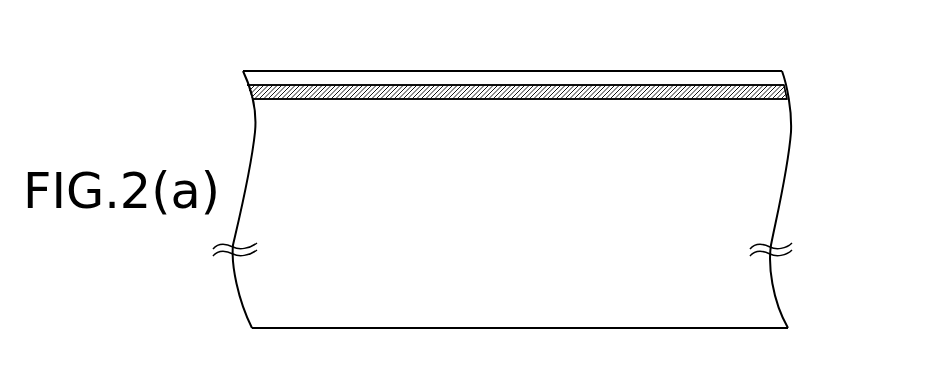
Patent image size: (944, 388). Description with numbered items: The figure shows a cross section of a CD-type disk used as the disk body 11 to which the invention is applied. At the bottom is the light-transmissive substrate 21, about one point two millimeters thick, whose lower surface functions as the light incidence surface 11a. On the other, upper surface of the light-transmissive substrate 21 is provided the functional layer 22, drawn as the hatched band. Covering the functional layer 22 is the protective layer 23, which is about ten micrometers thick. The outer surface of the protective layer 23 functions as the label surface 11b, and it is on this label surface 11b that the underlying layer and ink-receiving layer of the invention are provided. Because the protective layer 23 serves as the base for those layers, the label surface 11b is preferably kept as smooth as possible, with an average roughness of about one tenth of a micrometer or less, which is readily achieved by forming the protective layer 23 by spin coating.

The disk body 11 is at (296, 39).
The light incidence surface 11a is at (473, 328).
The label surface 11b is at (661, 71).
The light-transmissive substrate 21 is at (760, 285).
The functional layer 22 is at (774, 96).
The protective layer 23 is at (772, 79).